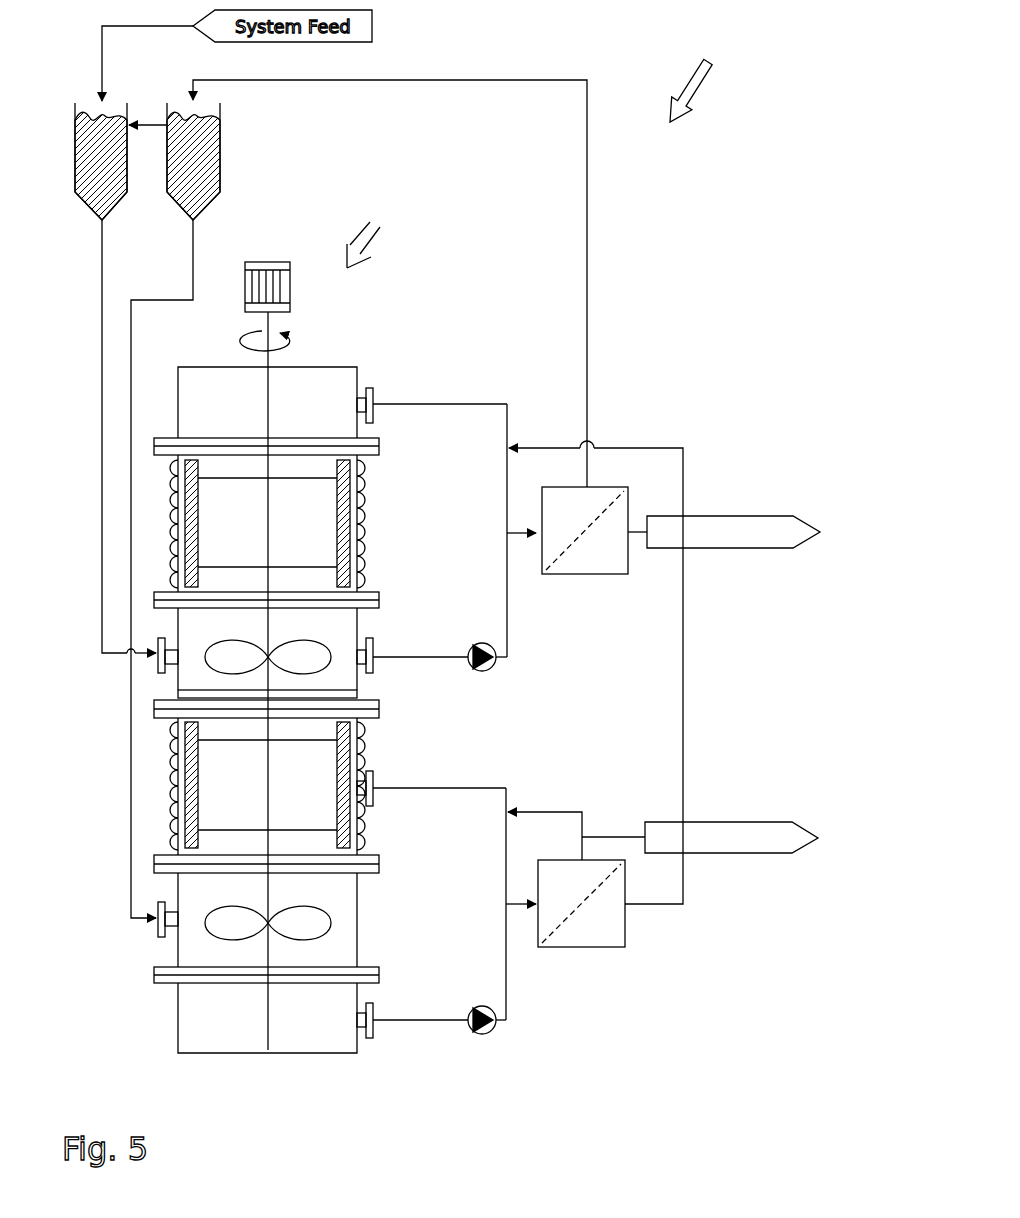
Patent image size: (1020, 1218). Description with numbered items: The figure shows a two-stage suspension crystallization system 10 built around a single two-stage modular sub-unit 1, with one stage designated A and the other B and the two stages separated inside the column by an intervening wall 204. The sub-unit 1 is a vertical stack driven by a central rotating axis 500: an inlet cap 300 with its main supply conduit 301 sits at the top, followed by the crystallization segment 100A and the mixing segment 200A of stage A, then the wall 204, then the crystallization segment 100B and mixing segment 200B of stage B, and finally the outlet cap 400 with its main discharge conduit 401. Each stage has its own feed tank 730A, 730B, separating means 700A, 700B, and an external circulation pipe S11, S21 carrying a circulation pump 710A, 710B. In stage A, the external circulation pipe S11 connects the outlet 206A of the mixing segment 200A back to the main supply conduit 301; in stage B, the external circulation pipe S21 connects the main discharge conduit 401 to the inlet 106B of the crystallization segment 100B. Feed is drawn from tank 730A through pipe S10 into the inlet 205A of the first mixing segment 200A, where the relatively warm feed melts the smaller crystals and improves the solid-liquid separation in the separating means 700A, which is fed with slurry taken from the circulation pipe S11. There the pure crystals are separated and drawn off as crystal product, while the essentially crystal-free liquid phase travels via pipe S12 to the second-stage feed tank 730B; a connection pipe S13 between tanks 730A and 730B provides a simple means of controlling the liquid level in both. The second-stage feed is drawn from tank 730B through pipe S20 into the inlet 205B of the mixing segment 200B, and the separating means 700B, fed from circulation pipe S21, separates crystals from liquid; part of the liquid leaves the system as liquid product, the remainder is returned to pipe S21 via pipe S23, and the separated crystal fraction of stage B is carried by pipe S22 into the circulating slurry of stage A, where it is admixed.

The two-stage suspension crystallization system 10 is at (709, 71).
The modular sub-unit 1 is at (368, 228).
The feed tank 730A is at (120, 190).
The feed tank 730B is at (198, 188).
The connection pipe S13 is at (137, 126).
The pipe S10 is at (103, 264).
The pipe S20 is at (132, 320).
The pipe S12 is at (587, 152).
The central rotating axis 500 is at (270, 366).
The inlet cap 300 is at (308, 408).
The main supply conduit 301 is at (374, 410).
The crystallization segment 100A is at (308, 536).
The mixing segment 200A is at (308, 662).
The intervening wall 204 is at (233, 706).
The inlet 205A is at (160, 658).
The outlet 206A is at (374, 661).
The circulation pump 710A is at (490, 662).
The external circulation pipe S11 is at (508, 617).
The separating means 700A is at (620, 560).
The pipe S22 is at (684, 877).
The crystallization segment 100B is at (305, 785).
The inlet 106B is at (374, 792).
The pipe S23 is at (562, 810).
The mixing segment 200B is at (305, 927).
The inlet 205B is at (160, 920).
The outlet cap 400 is at (303, 1027).
The main discharge conduit 401 is at (374, 1024).
The circulation pump 710B is at (490, 1025).
The external circulation pipe S21 is at (507, 978).
The separating means 700B is at (618, 915).